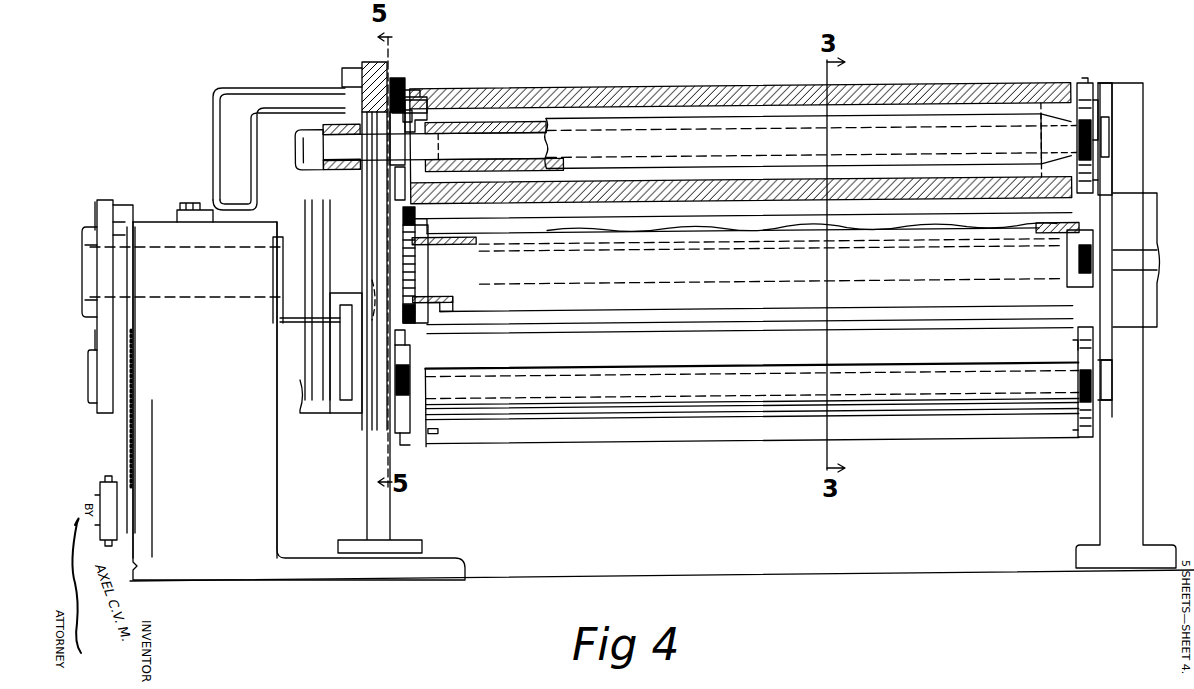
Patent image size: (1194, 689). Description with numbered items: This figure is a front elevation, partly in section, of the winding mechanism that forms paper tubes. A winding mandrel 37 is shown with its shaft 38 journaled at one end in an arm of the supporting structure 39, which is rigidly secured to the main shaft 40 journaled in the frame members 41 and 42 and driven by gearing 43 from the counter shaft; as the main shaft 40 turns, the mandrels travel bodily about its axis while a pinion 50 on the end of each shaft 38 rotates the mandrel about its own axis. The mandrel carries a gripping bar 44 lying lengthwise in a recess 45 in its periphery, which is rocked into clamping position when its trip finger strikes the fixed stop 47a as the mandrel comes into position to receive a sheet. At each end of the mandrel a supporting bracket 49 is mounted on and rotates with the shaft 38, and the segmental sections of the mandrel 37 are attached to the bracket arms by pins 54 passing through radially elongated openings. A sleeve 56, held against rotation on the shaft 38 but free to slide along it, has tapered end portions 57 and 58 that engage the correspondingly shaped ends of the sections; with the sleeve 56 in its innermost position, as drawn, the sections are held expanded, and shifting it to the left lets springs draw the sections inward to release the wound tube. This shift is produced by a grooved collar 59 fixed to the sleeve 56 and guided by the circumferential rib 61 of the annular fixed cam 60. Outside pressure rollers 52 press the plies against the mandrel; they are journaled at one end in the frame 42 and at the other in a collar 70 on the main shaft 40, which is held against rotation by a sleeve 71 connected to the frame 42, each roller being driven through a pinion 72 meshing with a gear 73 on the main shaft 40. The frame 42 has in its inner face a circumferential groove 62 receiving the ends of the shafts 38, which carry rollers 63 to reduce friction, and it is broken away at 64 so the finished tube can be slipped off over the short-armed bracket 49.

The winding mandrel 37 is at (618, 93).
The mandrel shaft 38 is at (478, 140).
The supporting structure 39 is at (338, 345).
The main shaft 40 is at (460, 255).
The frame member 41 is at (285, 494).
The frame member 42 is at (1108, 500).
The gearing 43 is at (120, 450).
The gripping bar 44 is at (748, 410).
The recess 45 is at (692, 405).
The stop 47a is at (395, 75).
The supporting bracket 49 is at (398, 78).
The pinion 50 is at (330, 63).
The outside pressure roller 52 is at (498, 222).
The supporting pin 54 is at (410, 110).
The sleeve 56 is at (668, 118).
The tapered end portion 57 is at (416, 112).
The tapered end portion 58 is at (1063, 90).
The grooved collar 59 is at (360, 110).
The annular fixed cam 60 is at (385, 493).
The circumferential rib 61 is at (395, 185).
The circumferential groove 62 is at (1105, 115).
The roller 63 is at (1110, 120).
The broken-away portion 64 is at (1145, 210).
The collar 70 is at (415, 228).
The sleeve 71 is at (472, 243).
The pinion 72 is at (402, 215).
The gear 73 is at (420, 274).